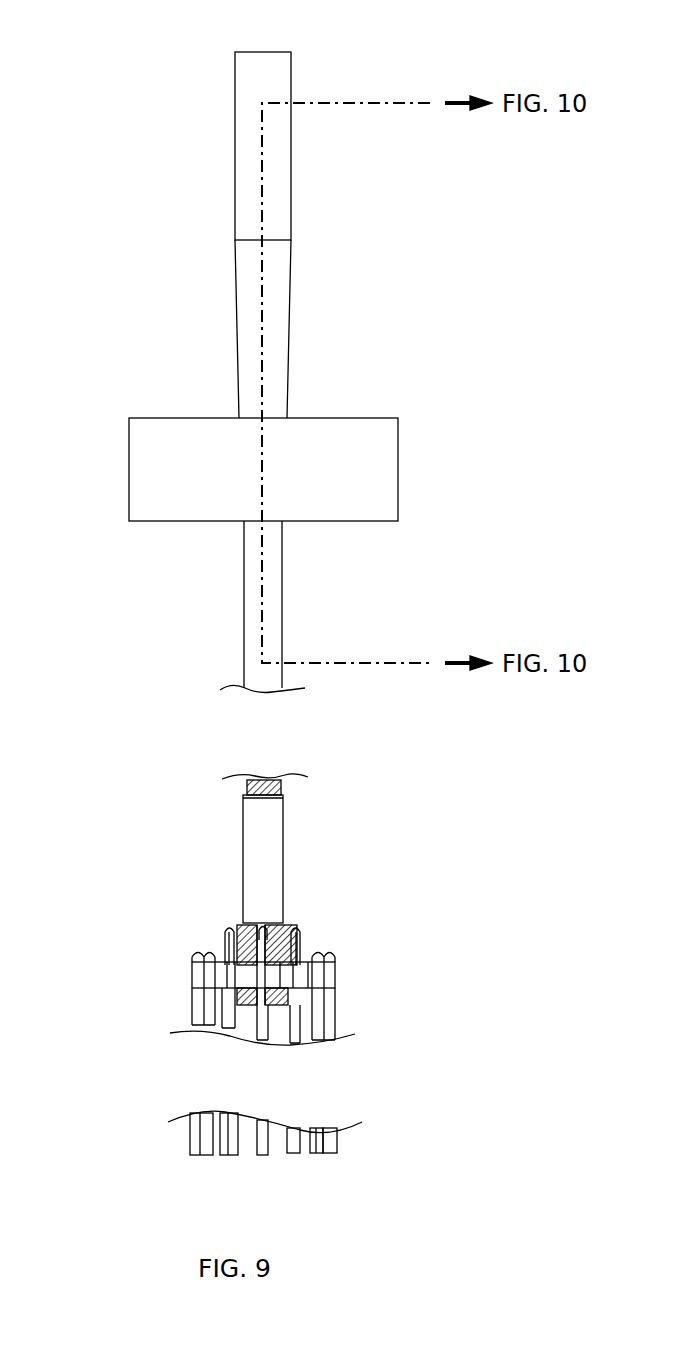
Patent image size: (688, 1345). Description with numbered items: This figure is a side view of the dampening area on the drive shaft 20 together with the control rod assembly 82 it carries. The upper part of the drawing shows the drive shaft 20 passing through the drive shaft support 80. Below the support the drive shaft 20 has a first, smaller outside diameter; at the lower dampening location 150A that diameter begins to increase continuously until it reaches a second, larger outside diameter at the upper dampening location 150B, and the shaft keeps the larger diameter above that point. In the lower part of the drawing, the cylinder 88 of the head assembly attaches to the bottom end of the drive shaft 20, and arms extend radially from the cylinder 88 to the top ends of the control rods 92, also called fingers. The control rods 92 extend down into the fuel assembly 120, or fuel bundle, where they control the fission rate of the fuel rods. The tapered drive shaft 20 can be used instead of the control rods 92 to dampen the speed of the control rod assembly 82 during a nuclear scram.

The drive shaft 20 is at (246, 77).
The upper dampening location 150B is at (247, 295).
The drive shaft support 80 is at (140, 460).
The lower dampening location 150A is at (246, 531).
The cylinder 88 is at (247, 844).
The control rod assembly 82 is at (392, 926).
The control rods 92 is at (190, 1003).
The fuel assembly 120 is at (408, 1076).